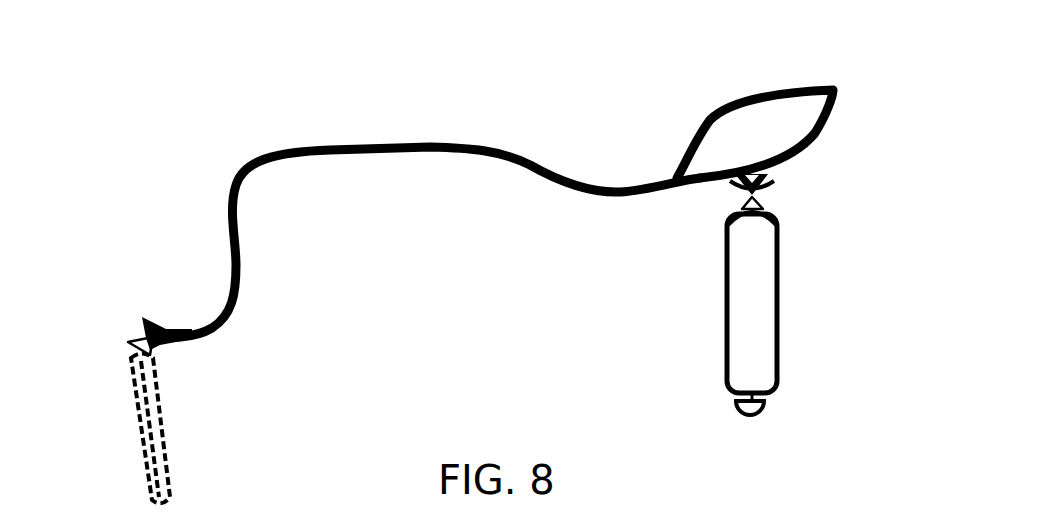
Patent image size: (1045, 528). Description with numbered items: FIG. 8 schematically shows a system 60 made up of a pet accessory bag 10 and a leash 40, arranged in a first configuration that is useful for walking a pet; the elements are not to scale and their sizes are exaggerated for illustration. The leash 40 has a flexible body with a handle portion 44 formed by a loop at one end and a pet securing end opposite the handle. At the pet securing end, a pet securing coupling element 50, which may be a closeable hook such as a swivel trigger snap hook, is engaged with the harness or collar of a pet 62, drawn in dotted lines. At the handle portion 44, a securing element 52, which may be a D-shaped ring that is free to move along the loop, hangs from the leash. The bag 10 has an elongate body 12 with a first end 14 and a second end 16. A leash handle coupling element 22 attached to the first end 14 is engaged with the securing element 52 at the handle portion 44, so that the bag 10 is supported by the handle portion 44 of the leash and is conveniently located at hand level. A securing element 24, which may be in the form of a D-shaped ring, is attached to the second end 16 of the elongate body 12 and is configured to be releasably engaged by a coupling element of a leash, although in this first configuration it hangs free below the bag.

The pet accessory bag 10 is at (841, 256).
The elongate body 12 is at (781, 305).
The first end 14 is at (772, 216).
The second end 16 is at (766, 396).
The leash handle coupling element 22 is at (766, 191).
The securing element 24 is at (750, 422).
The leash 40 is at (385, 143).
The handle portion 44 is at (832, 63).
The pet securing coupling element 50 is at (138, 338).
The securing element 52 is at (738, 188).
The system 60 is at (611, 76).
The pet 62 is at (172, 432).